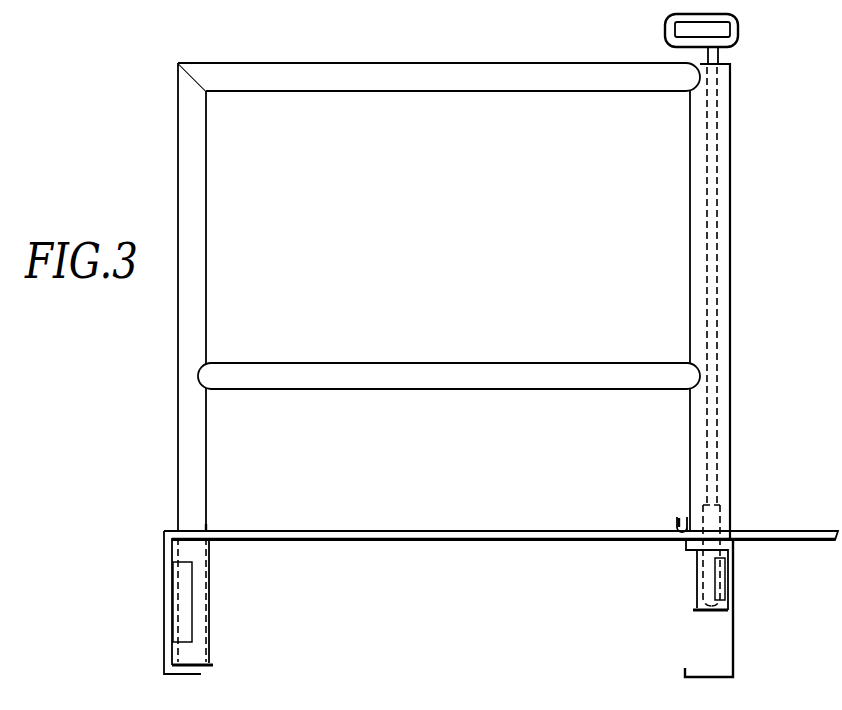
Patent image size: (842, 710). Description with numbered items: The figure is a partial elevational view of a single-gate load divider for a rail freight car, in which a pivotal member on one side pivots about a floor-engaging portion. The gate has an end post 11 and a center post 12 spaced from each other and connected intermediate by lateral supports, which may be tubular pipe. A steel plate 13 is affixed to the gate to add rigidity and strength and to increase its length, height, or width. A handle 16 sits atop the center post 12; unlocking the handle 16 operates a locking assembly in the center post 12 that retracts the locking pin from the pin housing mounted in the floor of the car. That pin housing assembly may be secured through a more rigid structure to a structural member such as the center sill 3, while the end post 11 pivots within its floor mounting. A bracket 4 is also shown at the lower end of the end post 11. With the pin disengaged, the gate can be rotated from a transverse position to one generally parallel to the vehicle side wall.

The center sill 3 is at (735, 642).
The mounting bracket (left) 4 is at (164, 638).
The end post 11 is at (178, 403).
The center post 12 is at (733, 156).
The steel plate 13 is at (461, 251).
The handle 16 is at (740, 28).